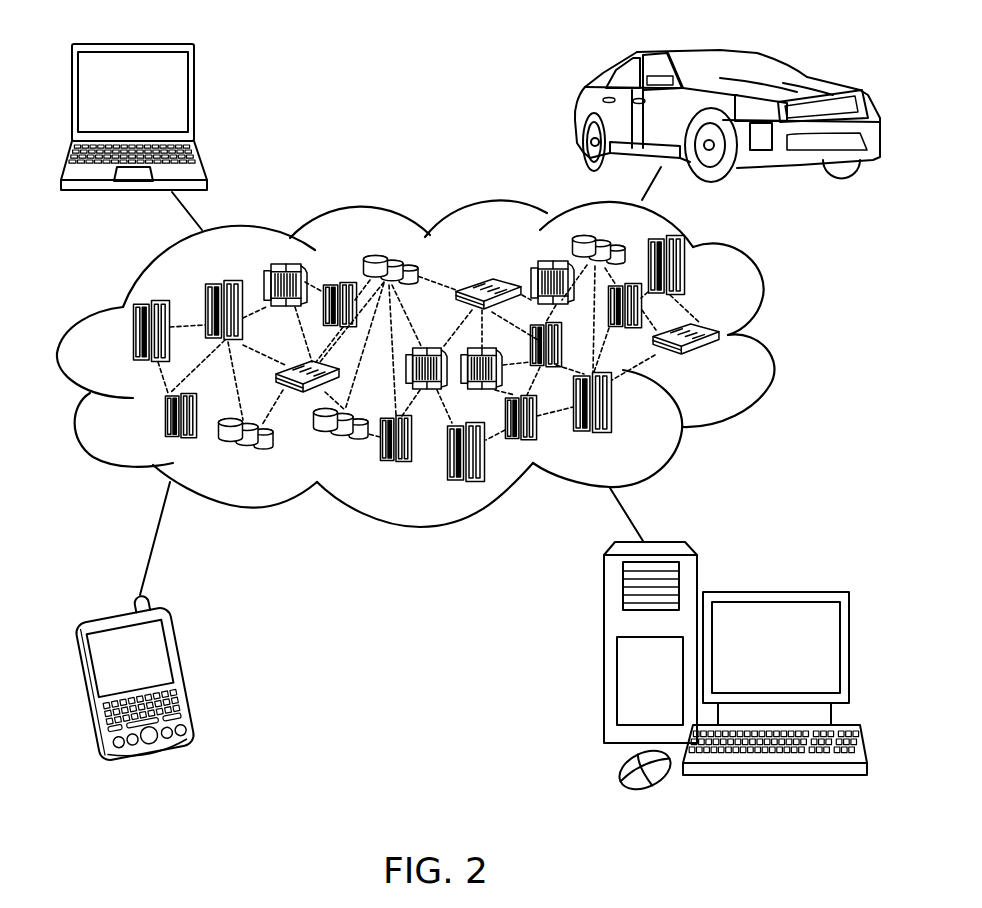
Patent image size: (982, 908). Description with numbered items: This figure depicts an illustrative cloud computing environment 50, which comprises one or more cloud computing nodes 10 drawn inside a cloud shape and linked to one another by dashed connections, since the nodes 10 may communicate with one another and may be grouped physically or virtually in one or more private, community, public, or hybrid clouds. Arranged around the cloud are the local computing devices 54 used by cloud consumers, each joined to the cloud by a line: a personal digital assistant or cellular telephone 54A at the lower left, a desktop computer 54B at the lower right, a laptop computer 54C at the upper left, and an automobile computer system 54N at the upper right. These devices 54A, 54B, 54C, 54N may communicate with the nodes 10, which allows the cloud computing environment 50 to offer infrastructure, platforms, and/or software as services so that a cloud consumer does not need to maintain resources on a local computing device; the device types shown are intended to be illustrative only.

The cloud computing nodes 10 is at (449, 363).
The cloud computing environment 50 is at (747, 379).
The local computing devices 54 is at (165, 106).
The personal digital assistant or cellular telephone 54A is at (188, 678).
The desktop computer 54B is at (794, 592).
The laptop computer 54C is at (194, 93).
The automobile computer system 54N is at (581, 109).